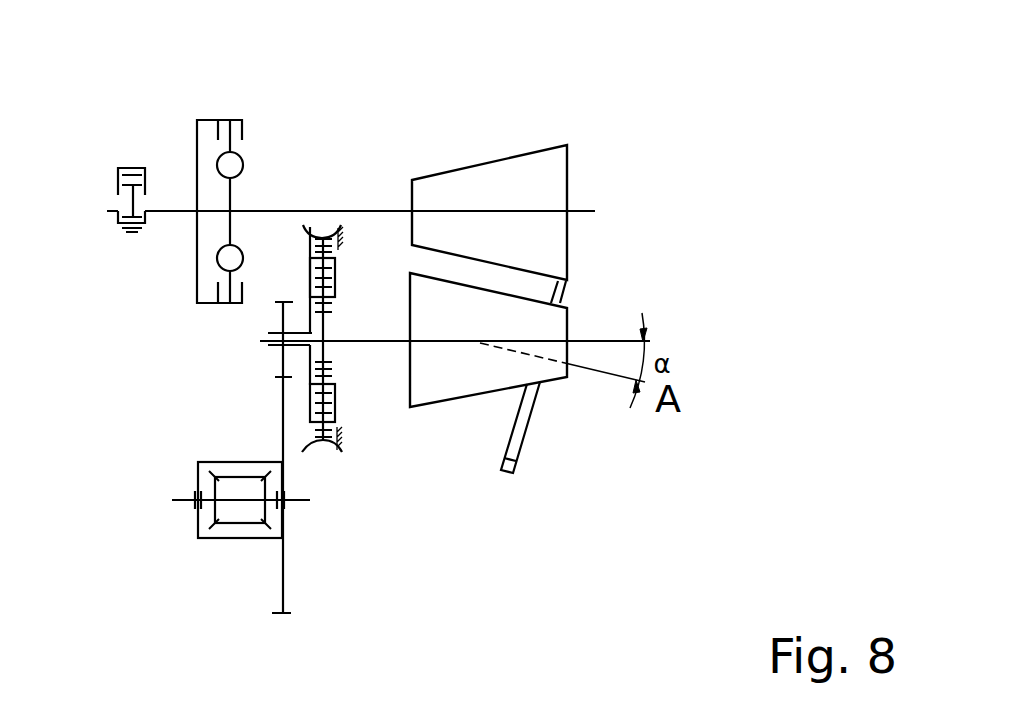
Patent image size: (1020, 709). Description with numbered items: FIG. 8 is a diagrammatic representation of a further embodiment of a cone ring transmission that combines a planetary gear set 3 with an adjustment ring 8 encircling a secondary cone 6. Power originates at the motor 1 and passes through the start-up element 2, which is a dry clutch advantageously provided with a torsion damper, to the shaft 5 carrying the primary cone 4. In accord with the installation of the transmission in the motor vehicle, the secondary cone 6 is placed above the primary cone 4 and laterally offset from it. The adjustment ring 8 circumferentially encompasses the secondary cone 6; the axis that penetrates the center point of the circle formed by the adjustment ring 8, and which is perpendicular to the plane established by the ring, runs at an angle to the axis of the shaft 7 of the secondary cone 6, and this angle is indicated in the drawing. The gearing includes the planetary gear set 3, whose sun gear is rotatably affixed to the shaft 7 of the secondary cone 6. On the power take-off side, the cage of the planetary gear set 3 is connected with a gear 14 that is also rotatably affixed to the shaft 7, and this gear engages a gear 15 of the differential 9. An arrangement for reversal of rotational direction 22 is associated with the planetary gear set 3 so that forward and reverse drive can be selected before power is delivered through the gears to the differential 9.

The motor 1 is at (142, 166).
The start-up element 2 is at (230, 118).
The planetary gear set 3 is at (340, 277).
The primary cone 4 is at (543, 150).
The shaft 5 is at (582, 214).
The secondary cone 6 is at (428, 405).
The shaft 7 is at (582, 341).
The adjustment ring 8 is at (515, 470).
The differential 9 is at (240, 540).
The gear 14 is at (283, 318).
The gear 15 is at (283, 427).
The arrangement for reversal of rotational direction 22 is at (323, 447).